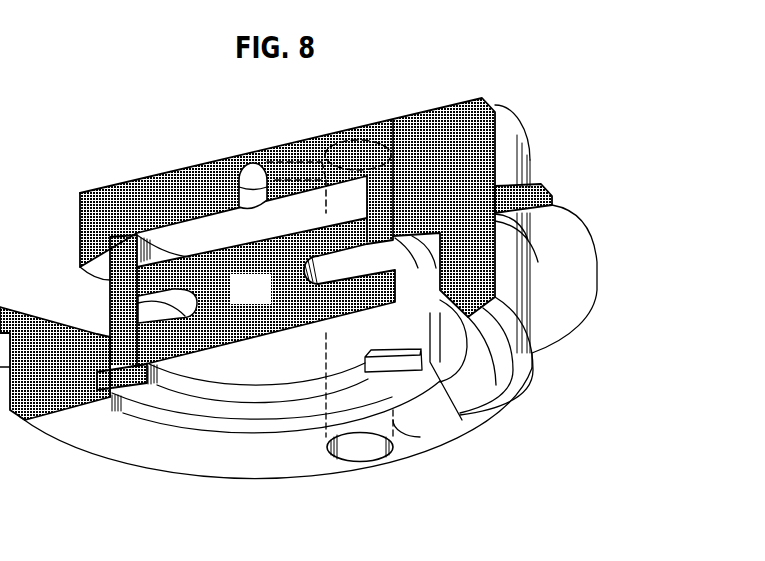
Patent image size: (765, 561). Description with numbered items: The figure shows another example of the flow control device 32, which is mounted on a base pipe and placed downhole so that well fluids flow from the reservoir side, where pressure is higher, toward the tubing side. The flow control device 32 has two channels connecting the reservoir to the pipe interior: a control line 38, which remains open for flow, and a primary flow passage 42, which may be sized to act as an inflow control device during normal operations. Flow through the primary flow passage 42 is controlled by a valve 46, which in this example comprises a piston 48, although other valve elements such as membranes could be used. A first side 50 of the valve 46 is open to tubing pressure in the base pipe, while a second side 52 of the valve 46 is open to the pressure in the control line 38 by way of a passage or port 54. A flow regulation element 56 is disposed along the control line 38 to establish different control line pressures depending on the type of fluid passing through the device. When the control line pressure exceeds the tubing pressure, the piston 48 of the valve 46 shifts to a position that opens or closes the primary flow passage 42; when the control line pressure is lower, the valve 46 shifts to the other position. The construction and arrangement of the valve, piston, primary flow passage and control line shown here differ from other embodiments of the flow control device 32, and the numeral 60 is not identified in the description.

The flow control device 32 is at (558, 127).
The control line 38 is at (239, 187).
The primary flow passage 42 is at (57, 288).
The valve 46 is at (225, 362).
The piston 48 is at (265, 302).
The first side 50 is at (269, 366).
The second side 52 is at (196, 239).
The passage or port 54 is at (242, 210).
The flow regulation element 56 is at (300, 155).
The hole 60 is at (361, 453).